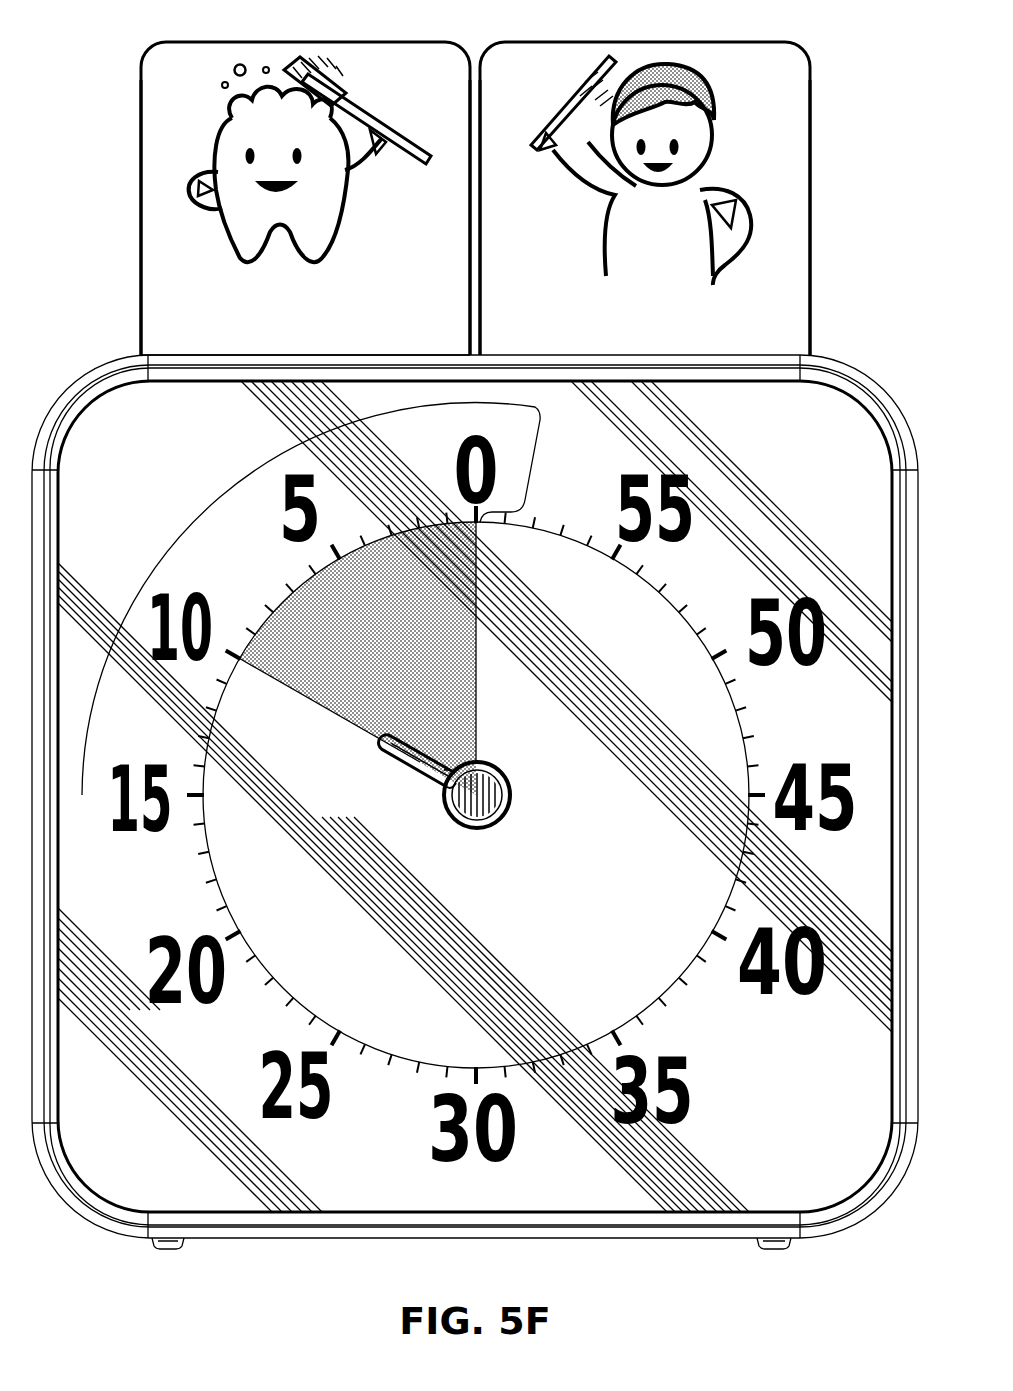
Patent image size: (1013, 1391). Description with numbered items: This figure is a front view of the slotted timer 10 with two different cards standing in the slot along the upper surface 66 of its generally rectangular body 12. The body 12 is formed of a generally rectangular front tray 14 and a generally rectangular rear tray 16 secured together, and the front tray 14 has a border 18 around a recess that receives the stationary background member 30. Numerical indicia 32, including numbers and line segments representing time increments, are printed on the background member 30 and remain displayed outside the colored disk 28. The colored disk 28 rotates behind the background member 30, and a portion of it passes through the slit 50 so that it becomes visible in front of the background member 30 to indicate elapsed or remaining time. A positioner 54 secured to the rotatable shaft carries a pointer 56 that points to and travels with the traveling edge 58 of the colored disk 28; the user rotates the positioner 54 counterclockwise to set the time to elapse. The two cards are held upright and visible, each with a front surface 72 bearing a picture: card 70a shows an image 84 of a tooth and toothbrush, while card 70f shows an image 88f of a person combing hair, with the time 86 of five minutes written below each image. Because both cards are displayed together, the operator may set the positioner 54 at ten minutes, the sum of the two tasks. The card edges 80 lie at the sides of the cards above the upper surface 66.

The slotted timer 10 is at (63, 252).
The generally rectangular body 12 is at (865, 352).
The front tray 14 is at (86, 364).
The rear tray 16 is at (305, 42).
The border 18 is at (243, 1228).
The colored disk 28 is at (657, 974).
The background member 30 is at (850, 1177).
The numerical indicia 32 is at (166, 938).
The slit 50 is at (476, 658).
The positioner 54 is at (511, 811).
The pointer 56 is at (412, 775).
The traveling edge 58 is at (326, 710).
The upper surface 66 is at (175, 354).
The card 70a is at (326, 168).
The card 70f is at (703, 169).
The front surface 72 is at (392, 258).
The card edge 80 is at (141, 230).
The image 84 is at (366, 112).
The time 86 is at (403, 304).
The image 88f is at (720, 194).